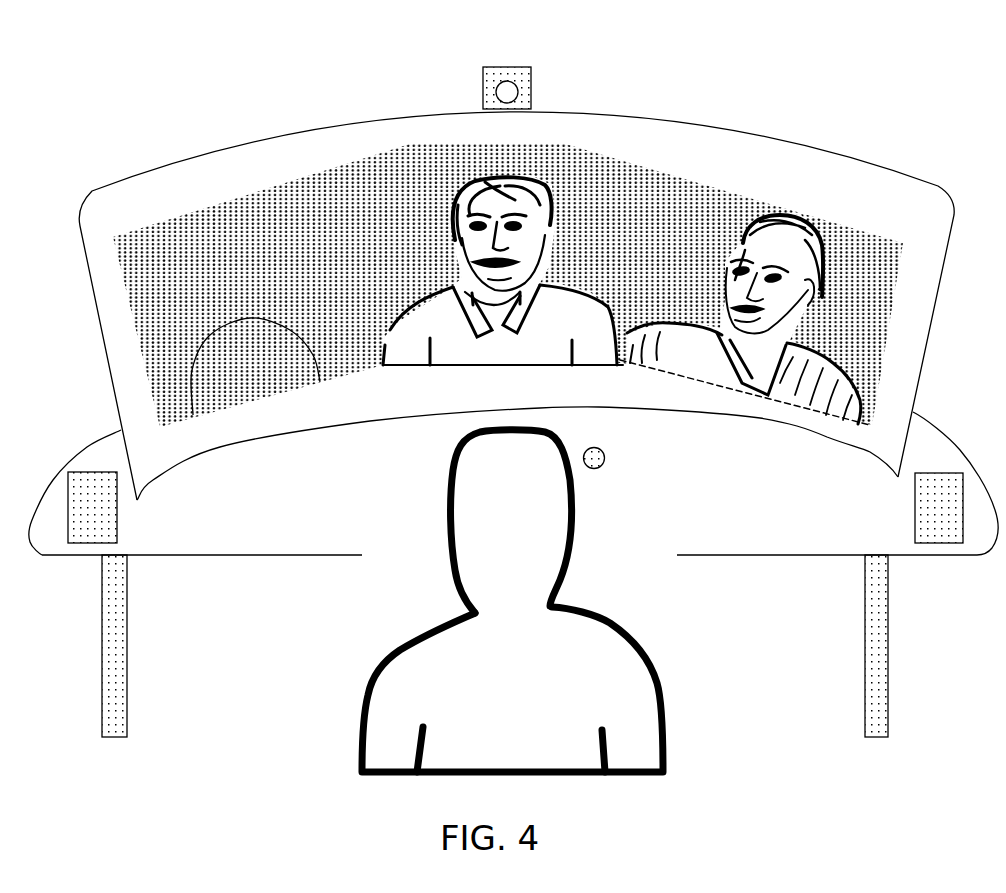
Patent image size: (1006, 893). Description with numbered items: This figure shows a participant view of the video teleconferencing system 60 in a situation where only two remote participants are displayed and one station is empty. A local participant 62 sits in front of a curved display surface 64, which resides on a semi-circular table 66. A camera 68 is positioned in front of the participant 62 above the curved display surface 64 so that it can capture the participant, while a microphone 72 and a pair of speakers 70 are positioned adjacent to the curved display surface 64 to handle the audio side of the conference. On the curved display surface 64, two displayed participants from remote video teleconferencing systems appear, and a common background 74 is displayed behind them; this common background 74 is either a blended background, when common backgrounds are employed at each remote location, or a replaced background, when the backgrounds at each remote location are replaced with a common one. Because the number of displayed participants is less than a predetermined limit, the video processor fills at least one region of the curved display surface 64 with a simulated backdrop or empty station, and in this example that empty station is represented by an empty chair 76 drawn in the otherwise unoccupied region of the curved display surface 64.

The video teleconferencing system 60 is at (858, 91).
The participant 62 is at (366, 614).
The curved display surface 64 is at (925, 181).
The semi-circular table 66 is at (937, 432).
The camera 68 is at (506, 67).
The speakers 70 is at (117, 533).
The microphone 72 is at (600, 448).
The common background 74 is at (603, 155).
The empty chair 76 is at (258, 317).